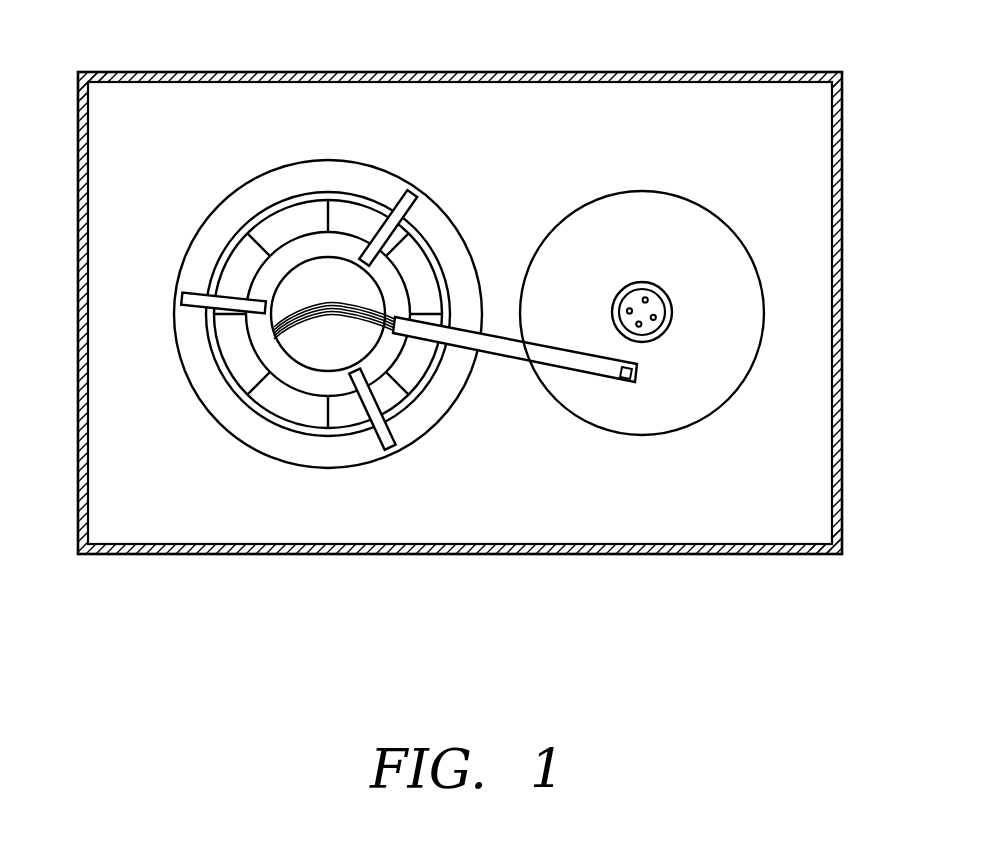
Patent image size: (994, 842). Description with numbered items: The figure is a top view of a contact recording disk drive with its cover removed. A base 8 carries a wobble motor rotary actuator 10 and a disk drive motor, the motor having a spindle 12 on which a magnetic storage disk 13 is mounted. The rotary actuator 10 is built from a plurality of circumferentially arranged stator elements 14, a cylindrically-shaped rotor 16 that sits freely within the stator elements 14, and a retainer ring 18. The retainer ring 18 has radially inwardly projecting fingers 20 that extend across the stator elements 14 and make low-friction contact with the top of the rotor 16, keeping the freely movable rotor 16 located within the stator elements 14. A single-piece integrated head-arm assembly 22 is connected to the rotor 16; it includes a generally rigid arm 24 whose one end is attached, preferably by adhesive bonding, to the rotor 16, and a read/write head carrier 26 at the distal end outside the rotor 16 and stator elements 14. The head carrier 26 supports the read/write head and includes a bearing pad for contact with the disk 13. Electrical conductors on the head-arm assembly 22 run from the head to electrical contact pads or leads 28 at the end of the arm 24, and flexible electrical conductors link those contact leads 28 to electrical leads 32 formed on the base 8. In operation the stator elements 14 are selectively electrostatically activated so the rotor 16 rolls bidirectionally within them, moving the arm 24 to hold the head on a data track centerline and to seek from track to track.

The base 8 is at (800, 162).
The wobble motor rotary actuator 10 is at (332, 307).
The spindle 12 is at (635, 298).
The magnetic storage disk 13 is at (747, 315).
The stator elements 14 is at (338, 415).
The rotor 16 is at (262, 335).
The retainer ring 18 is at (193, 363).
The fingers 20 is at (206, 296).
The integrated head-arm assembly 22 is at (476, 395).
The arm 24 is at (513, 352).
The read/write head carrier 26 is at (636, 380).
The electrical contact pads or leads 28 is at (396, 320).
The electrical leads 32 is at (232, 377).